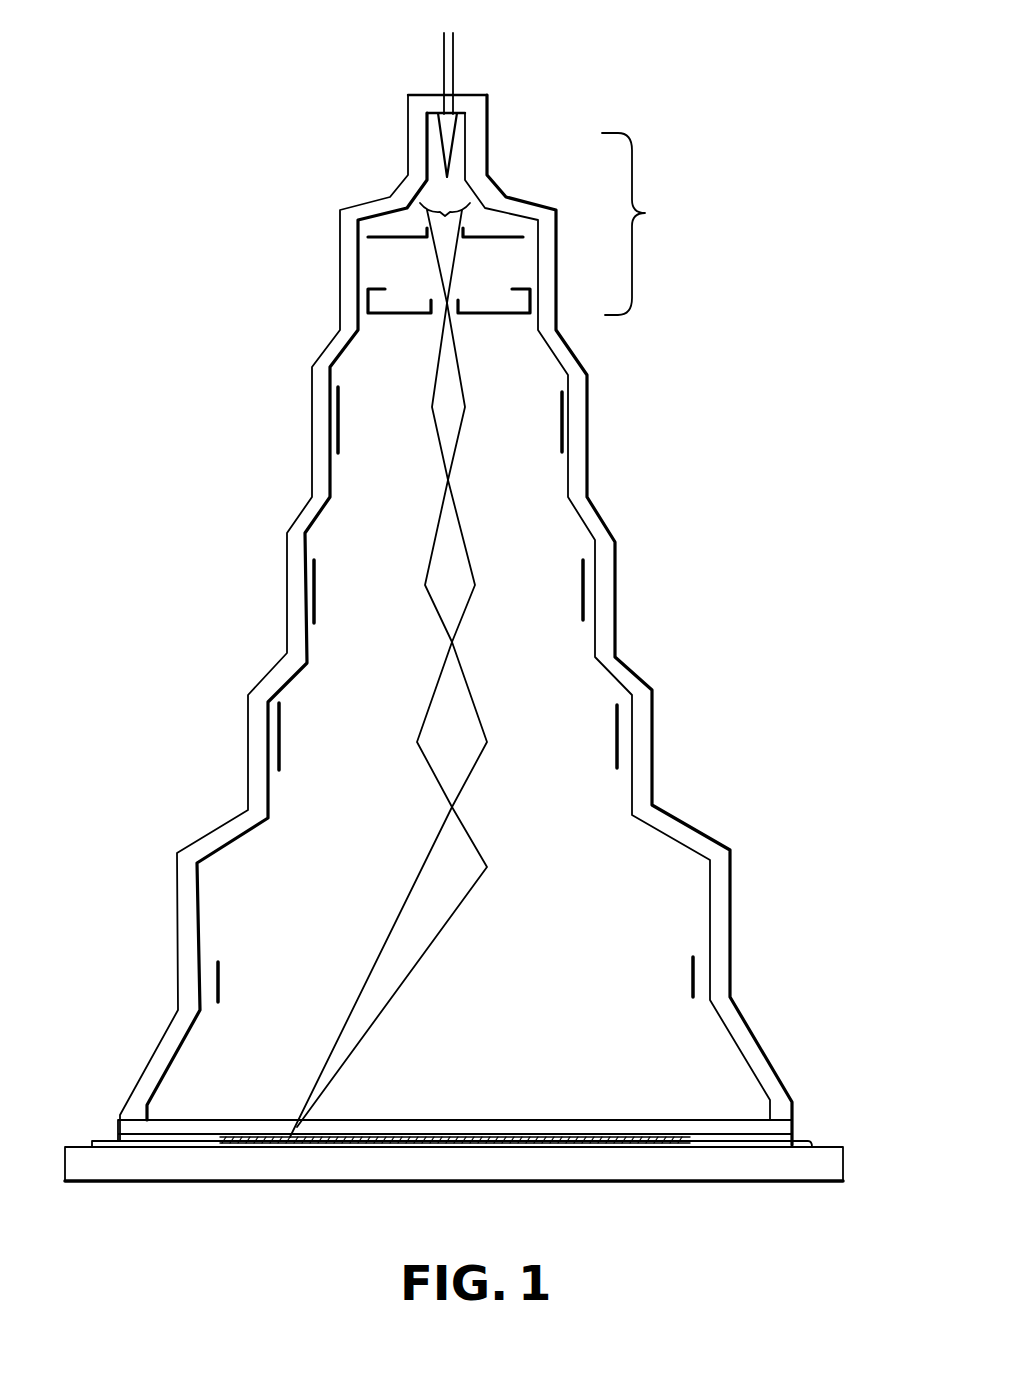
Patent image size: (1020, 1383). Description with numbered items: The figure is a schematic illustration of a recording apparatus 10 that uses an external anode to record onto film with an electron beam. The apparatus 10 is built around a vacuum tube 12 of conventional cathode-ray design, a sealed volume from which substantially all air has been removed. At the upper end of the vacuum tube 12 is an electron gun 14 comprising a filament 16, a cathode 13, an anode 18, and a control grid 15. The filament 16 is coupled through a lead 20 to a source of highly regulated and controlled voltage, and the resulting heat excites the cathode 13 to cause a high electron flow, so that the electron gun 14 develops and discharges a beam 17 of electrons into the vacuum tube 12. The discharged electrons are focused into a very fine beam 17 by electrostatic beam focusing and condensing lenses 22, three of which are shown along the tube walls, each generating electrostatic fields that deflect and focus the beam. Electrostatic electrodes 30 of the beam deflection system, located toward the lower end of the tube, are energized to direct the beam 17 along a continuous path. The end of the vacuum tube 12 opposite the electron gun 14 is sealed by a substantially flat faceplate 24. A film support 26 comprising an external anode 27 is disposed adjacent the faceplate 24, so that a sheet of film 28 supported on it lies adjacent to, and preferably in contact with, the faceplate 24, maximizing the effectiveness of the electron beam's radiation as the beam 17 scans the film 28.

The recording apparatus 10 is at (168, 793).
The vacuum tube 12 is at (542, 535).
The cathode 13 is at (450, 207).
The electron gun 14 is at (647, 224).
The control grid 15 is at (393, 237).
The filament 16 is at (443, 148).
The beam of electrons 17 is at (450, 920).
The anode 18 is at (368, 302).
The lead 20 is at (446, 57).
The electrostatic beam focusing and condensing lenses 22 is at (340, 418).
The faceplate 24 is at (723, 1128).
The film support 26 is at (833, 1173).
The external anode 27 is at (810, 1145).
The film 28 is at (627, 1138).
The electrostatic electrodes 30 is at (218, 982).